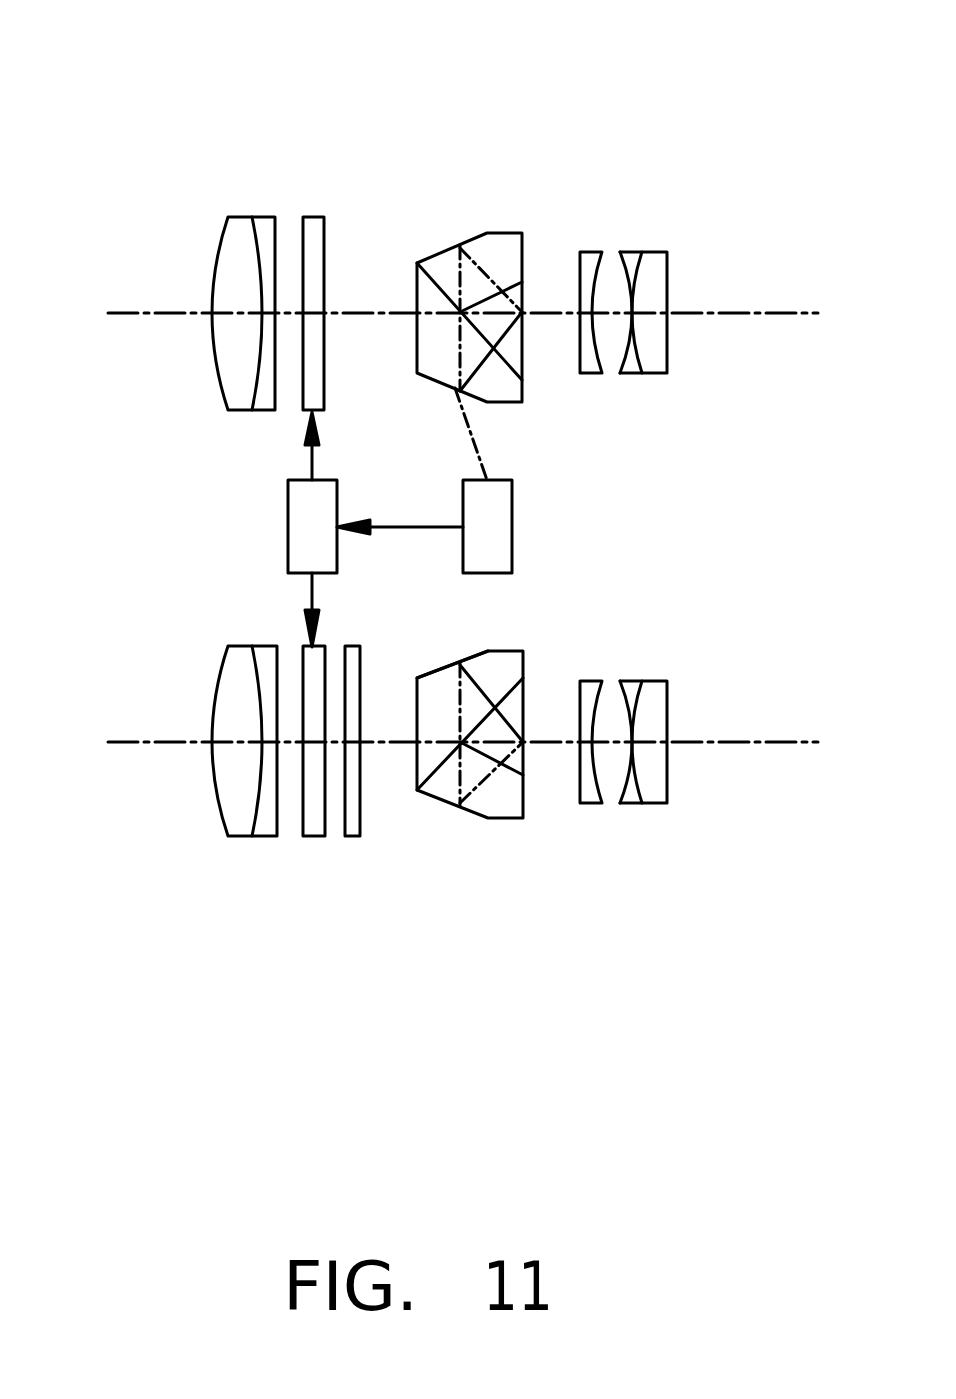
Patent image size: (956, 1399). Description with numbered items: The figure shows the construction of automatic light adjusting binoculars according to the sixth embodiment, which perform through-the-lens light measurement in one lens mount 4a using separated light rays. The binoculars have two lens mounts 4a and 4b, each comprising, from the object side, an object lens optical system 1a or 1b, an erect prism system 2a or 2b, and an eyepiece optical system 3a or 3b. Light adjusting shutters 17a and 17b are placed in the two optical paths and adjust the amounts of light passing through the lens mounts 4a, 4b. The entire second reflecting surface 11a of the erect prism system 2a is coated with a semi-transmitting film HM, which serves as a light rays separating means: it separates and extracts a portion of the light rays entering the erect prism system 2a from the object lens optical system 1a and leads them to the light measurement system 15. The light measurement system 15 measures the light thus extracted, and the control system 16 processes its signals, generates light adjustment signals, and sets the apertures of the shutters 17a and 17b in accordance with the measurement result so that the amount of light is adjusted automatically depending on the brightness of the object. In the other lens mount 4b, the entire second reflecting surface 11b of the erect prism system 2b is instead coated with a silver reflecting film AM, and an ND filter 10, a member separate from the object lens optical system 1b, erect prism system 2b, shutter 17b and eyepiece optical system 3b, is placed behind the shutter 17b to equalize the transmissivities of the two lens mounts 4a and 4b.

The object lens optical system 1a is at (296, 193).
The object lens optical system 1b is at (296, 860).
The light adjusting shutter 17a is at (325, 243).
The light adjusting shutter 17b is at (315, 836).
The erect prism system 2a is at (537, 193).
The erect prism system 2b is at (537, 860).
The eyepiece optical system 3a is at (688, 192).
The eyepiece optical system 3b is at (688, 860).
The lens mount 4a is at (688, 100).
The lens mount 4b is at (688, 955).
The second reflecting surface 11a is at (419, 376).
The second reflecting surface 11b is at (435, 670).
The semi-transmitting film HM is at (450, 387).
The silver reflecting film AM is at (443, 668).
The light measurement system 15 is at (424, 526).
The control system 16 is at (312, 529).
The ND filter 10 is at (358, 828).